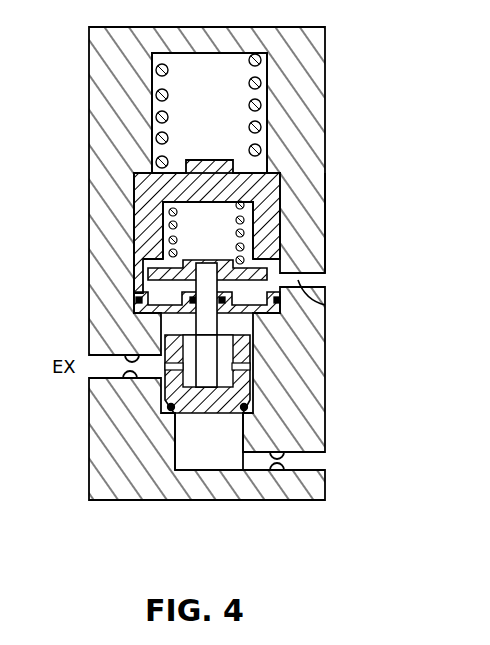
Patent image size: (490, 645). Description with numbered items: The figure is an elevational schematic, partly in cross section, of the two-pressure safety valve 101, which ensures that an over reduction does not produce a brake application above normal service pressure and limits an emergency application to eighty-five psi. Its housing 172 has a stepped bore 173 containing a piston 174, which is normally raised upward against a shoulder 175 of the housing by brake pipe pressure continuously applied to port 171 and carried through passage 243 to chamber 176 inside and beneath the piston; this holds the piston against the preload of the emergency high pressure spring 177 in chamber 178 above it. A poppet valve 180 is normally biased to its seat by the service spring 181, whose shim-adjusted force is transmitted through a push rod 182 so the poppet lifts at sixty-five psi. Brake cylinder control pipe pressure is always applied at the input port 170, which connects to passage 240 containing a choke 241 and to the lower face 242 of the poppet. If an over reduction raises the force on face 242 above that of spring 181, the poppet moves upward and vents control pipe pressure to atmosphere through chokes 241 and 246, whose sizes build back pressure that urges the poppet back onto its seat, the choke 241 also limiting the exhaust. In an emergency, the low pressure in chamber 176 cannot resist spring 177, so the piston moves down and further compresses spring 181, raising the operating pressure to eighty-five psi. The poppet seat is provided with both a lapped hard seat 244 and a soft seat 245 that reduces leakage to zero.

The two-pressure safety valve 101 is at (334, 76).
The input port 170 is at (325, 464).
The port 171 is at (323, 278).
The housing 172 is at (325, 193).
The stepped bore 173 is at (281, 229).
The piston 174 is at (137, 192).
The shoulder 175 is at (268, 174).
The chamber 176 is at (226, 240).
The spring 177 is at (157, 71).
The chamber 178 is at (226, 118).
The poppet valve 180 is at (246, 394).
The service spring 181 is at (168, 224).
The push rod 182 is at (160, 318).
The passage 240 is at (248, 461).
The choke 241 is at (274, 473).
The lower face 242 is at (211, 415).
The passage 243 is at (325, 307).
The hard seat 244 is at (170, 409).
The soft seat 245 is at (168, 412).
The choke 246 is at (130, 380).